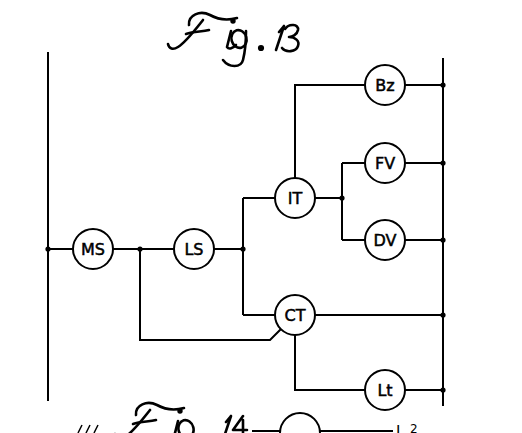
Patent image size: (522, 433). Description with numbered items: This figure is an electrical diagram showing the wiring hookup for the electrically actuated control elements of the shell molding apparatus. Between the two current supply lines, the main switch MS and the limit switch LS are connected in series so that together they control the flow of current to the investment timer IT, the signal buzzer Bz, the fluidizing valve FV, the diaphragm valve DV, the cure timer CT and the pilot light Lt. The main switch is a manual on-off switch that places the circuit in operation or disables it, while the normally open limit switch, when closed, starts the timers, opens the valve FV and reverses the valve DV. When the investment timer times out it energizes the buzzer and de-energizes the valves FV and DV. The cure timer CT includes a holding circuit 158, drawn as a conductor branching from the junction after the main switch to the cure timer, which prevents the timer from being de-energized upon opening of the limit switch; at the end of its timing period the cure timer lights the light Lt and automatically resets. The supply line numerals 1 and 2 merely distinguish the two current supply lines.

The holding circuit 158 is at (208, 341).
The supply line L1 1 is at (56, 40).
The supply line L2 2 is at (445, 220).